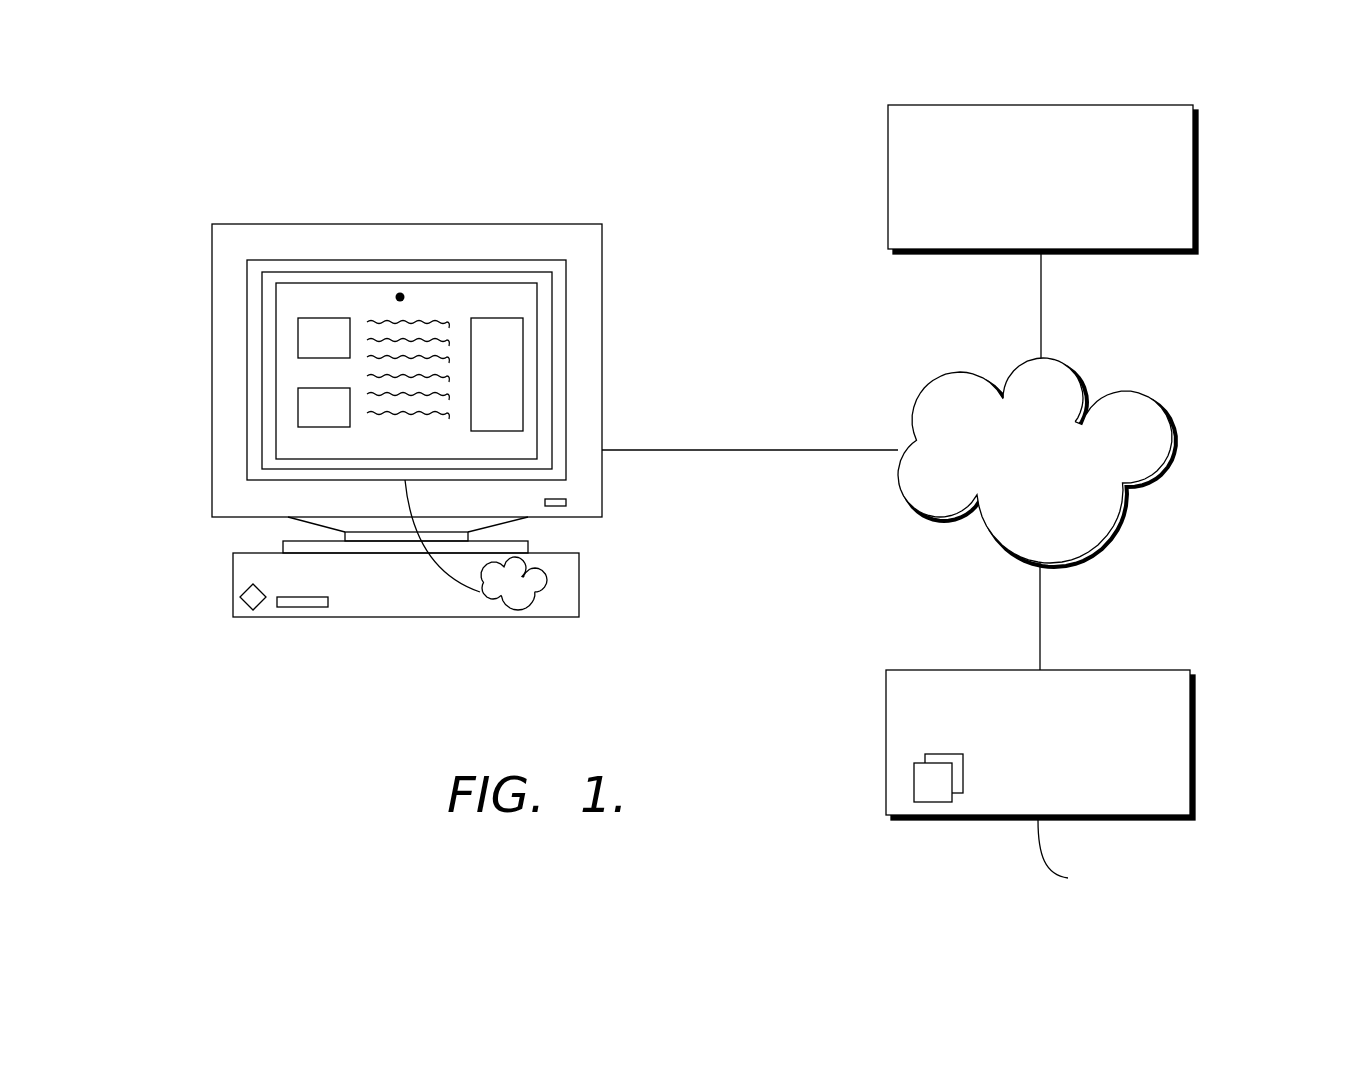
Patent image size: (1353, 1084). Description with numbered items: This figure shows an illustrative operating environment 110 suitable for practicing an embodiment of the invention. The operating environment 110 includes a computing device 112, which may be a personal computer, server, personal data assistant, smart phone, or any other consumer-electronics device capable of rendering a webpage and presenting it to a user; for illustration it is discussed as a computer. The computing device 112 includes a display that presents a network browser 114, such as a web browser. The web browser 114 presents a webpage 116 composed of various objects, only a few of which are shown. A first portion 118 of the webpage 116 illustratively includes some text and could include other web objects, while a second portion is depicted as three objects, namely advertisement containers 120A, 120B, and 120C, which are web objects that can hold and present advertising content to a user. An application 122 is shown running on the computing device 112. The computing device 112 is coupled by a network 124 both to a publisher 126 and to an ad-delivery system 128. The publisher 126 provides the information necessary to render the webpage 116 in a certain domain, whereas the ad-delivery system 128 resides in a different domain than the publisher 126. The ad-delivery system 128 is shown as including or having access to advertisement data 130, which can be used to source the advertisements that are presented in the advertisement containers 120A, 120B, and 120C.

The operating environment 110 is at (208, 140).
The computing device 112 is at (405, 617).
The network browser 114 is at (497, 272).
The webpage 116 is at (313, 282).
The first portion 118 is at (400, 293).
The advertisement container 120A is at (298, 338).
The advertisement container 120B is at (298, 410).
The advertisement container 120C is at (523, 373).
The application 122 is at (523, 610).
The network 124 is at (1172, 430).
The publisher 126 is at (1198, 175).
The ad-delivery system 128 is at (1195, 740).
The advertisement data 130 is at (886, 777).